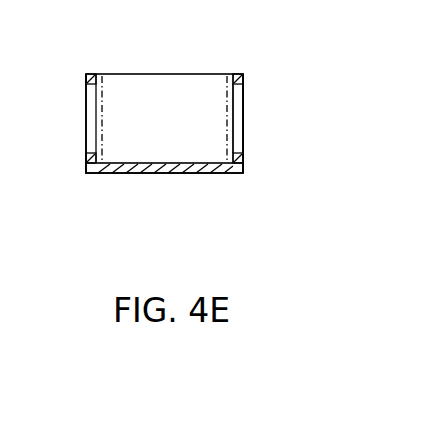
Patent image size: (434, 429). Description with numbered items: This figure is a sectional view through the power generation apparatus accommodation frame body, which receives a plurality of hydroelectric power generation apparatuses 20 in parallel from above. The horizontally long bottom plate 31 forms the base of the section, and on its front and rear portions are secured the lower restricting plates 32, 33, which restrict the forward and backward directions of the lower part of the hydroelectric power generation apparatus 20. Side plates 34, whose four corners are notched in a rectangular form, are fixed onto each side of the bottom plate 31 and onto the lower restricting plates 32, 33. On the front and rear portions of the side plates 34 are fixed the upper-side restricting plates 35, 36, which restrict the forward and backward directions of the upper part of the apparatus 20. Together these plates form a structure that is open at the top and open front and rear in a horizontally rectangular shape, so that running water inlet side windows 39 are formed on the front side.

The hydroelectric power generation apparatus 20 is at (152, 102).
The bottom plate 31 is at (152, 173).
The lower restricting plate 32 is at (243, 158).
The lower restricting plate 33 is at (86, 162).
The side plate 34 is at (86, 120).
The upper-side restricting plate 35 is at (240, 74).
The upper-side restricting plate 36 is at (92, 74).
The running water inlet side window 39 is at (243, 128).